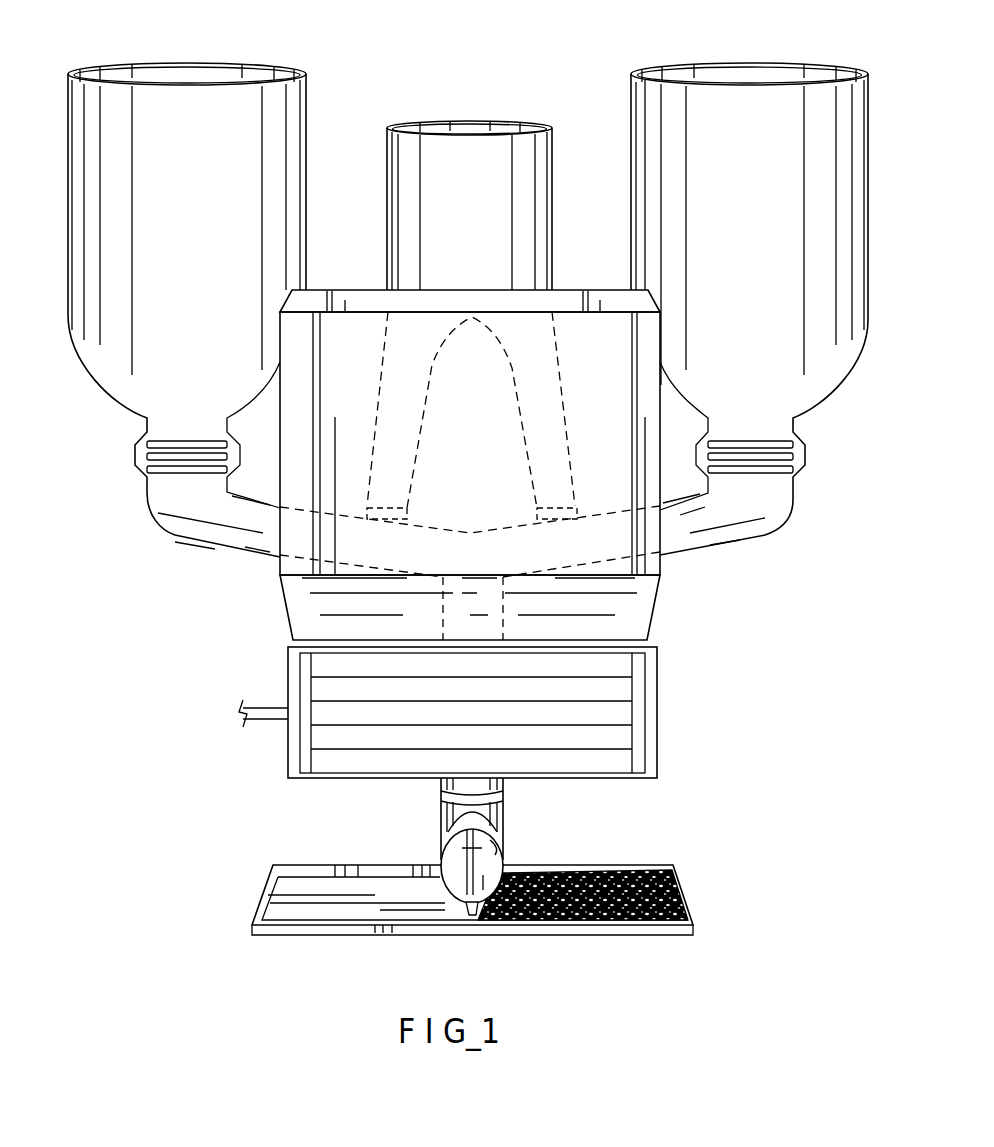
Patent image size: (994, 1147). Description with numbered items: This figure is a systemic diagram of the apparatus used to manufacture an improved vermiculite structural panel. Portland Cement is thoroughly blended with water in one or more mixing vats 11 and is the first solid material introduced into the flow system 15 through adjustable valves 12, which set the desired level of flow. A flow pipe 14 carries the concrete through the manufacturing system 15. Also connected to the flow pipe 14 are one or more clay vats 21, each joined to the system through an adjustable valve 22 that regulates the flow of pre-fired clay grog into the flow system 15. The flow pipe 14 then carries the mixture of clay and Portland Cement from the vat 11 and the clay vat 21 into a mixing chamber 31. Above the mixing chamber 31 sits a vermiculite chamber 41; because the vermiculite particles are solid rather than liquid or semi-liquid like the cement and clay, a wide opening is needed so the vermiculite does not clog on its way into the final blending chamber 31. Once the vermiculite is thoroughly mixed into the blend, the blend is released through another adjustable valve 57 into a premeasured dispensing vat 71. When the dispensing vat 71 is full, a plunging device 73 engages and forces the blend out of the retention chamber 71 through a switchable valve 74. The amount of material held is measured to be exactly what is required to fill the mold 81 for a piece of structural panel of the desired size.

The mixing vat 11 is at (219, 77).
The adjustable valve 12 is at (134, 462).
The flow pipe 14 is at (180, 526).
The flow system 15 is at (432, 843).
The clay vat 21 is at (483, 128).
The adjustable valve 22 is at (392, 510).
The mixing chamber 31 is at (657, 714).
The vermiculite chamber 41 is at (350, 300).
The adjustable valve 57 is at (500, 792).
The dispensing vat 71 is at (440, 856).
The plunging device 73 is at (498, 848).
The switchable valve 74 is at (470, 912).
The mold 81 is at (668, 925).